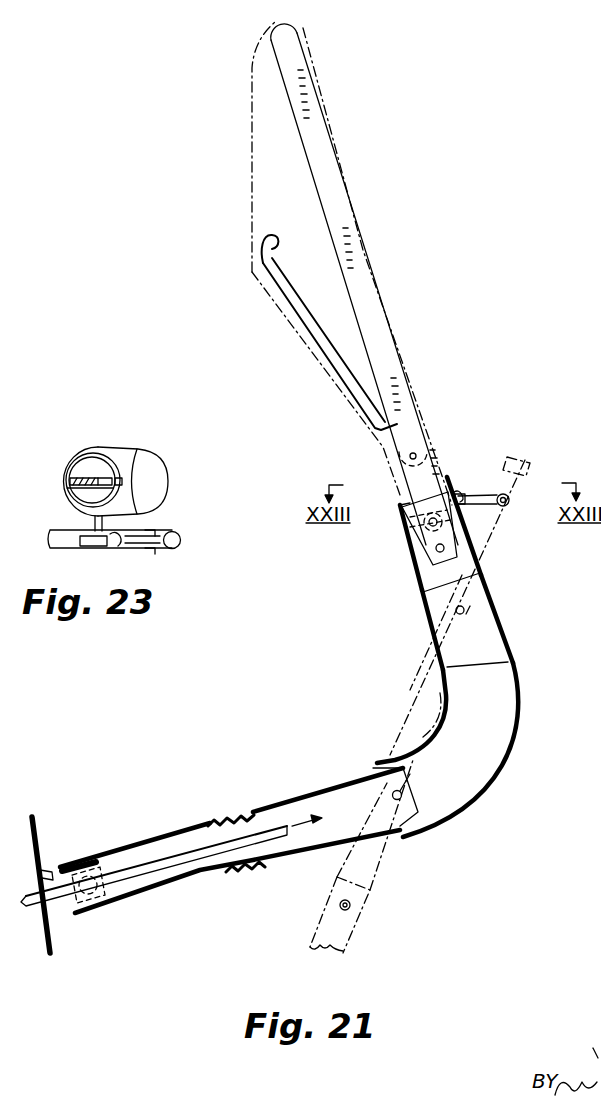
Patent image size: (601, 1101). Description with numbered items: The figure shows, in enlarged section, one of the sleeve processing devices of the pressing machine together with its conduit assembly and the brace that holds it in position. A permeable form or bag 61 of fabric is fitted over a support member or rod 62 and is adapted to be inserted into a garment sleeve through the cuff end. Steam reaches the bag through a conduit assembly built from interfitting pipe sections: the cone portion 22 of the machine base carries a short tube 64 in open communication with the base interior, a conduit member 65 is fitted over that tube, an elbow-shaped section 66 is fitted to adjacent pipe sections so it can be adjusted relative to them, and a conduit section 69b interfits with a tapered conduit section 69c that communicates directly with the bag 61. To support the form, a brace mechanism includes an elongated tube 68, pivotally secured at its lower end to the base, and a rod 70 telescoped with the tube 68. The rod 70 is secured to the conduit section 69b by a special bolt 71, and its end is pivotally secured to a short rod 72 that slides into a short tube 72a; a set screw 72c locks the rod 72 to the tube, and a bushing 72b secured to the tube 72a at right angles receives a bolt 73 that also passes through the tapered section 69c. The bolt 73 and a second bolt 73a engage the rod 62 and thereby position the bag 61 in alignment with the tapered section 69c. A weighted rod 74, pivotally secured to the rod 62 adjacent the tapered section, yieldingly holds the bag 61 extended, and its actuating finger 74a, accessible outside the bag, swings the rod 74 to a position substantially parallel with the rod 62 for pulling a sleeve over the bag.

In FIG. 21, the permeable form or bag 61 is at (250, 103).
In FIG. 21, the support member or rod 62 is at (326, 154).
In FIG. 23, the support member or rod 62 is at (73, 467).
In FIG. 21, the weighted rod 74 is at (262, 270).
In FIG. 21, the actuating finger 74a is at (407, 455).
In FIG. 21, the short rod 72 is at (460, 503).
In FIG. 23, the short rod 72 is at (140, 548).
In FIG. 21, the short tube 72a is at (461, 494).
In FIG. 23, the short tube 72a is at (88, 548).
In FIG. 21, the bushing 72b is at (420, 524).
In FIG. 21, the set screw 72c is at (456, 490).
In FIG. 23, the set screw 72c is at (117, 548).
In FIG. 21, the bolt 73 is at (405, 515).
In FIG. 21, the second bolt 73a is at (435, 549).
In FIG. 21, the tapered conduit section 69c is at (411, 582).
In FIG. 23, the tapered conduit section 69c is at (112, 438).
In FIG. 21, the conduit section 69b is at (510, 632).
In FIG. 23, the conduit section 69b is at (157, 470).
In FIG. 21, the special bolt 71 is at (466, 610).
In FIG. 21, the elbow-shaped section 66 is at (520, 716).
In FIG. 21, the rod 70 is at (405, 712).
In FIG. 23, the rod 70 is at (177, 535).
In FIG. 21, the cone portion 22 is at (38, 828).
In FIG. 21, the short tube 64 is at (55, 868).
In FIG. 21, the conduit member 65 is at (184, 832).
In FIG. 21, the elongated tube 68 is at (360, 924).